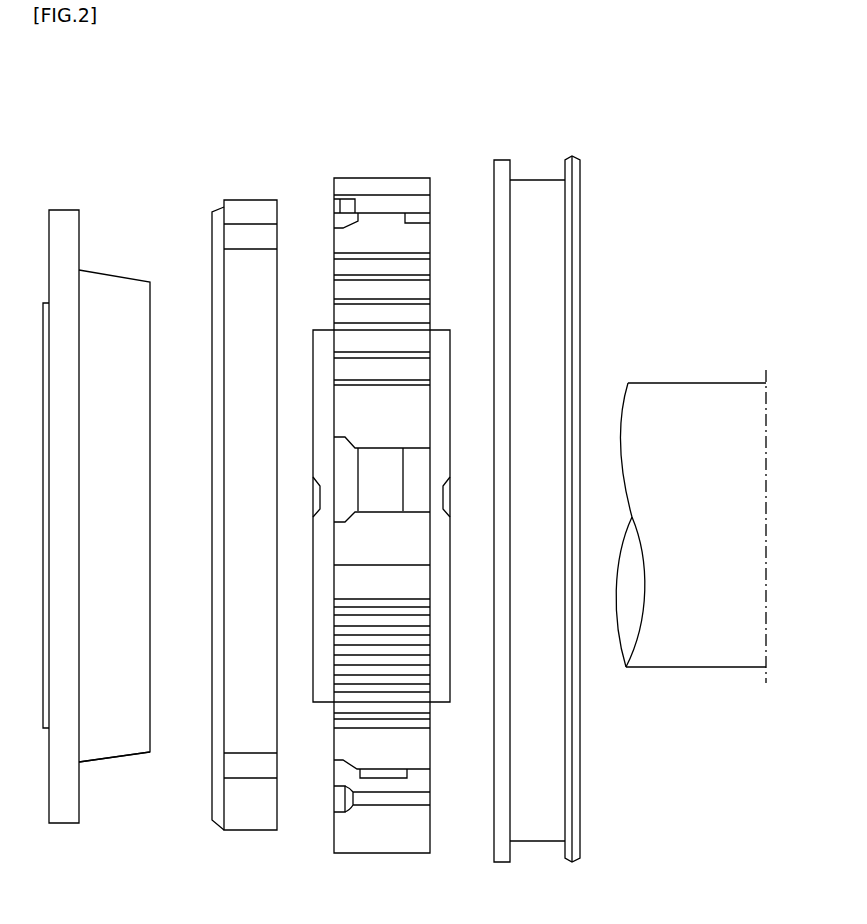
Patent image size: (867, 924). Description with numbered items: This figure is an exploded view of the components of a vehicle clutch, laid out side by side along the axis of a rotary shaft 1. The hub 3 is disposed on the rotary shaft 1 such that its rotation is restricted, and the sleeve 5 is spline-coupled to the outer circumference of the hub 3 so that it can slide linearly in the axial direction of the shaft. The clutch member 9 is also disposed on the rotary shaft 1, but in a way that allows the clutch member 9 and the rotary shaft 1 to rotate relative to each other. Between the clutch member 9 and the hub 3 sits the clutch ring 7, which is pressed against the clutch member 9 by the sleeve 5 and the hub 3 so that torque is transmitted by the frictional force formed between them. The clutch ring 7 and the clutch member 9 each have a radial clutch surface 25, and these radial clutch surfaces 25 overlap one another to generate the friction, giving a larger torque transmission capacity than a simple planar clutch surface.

The rotary shaft 1 is at (693, 383).
The hub 3 is at (381, 152).
The sleeve 5 is at (535, 128).
The clutch ring 7 is at (250, 170).
The clutch member 9 is at (117, 242).
The radial clutch surface 25 is at (150, 765).